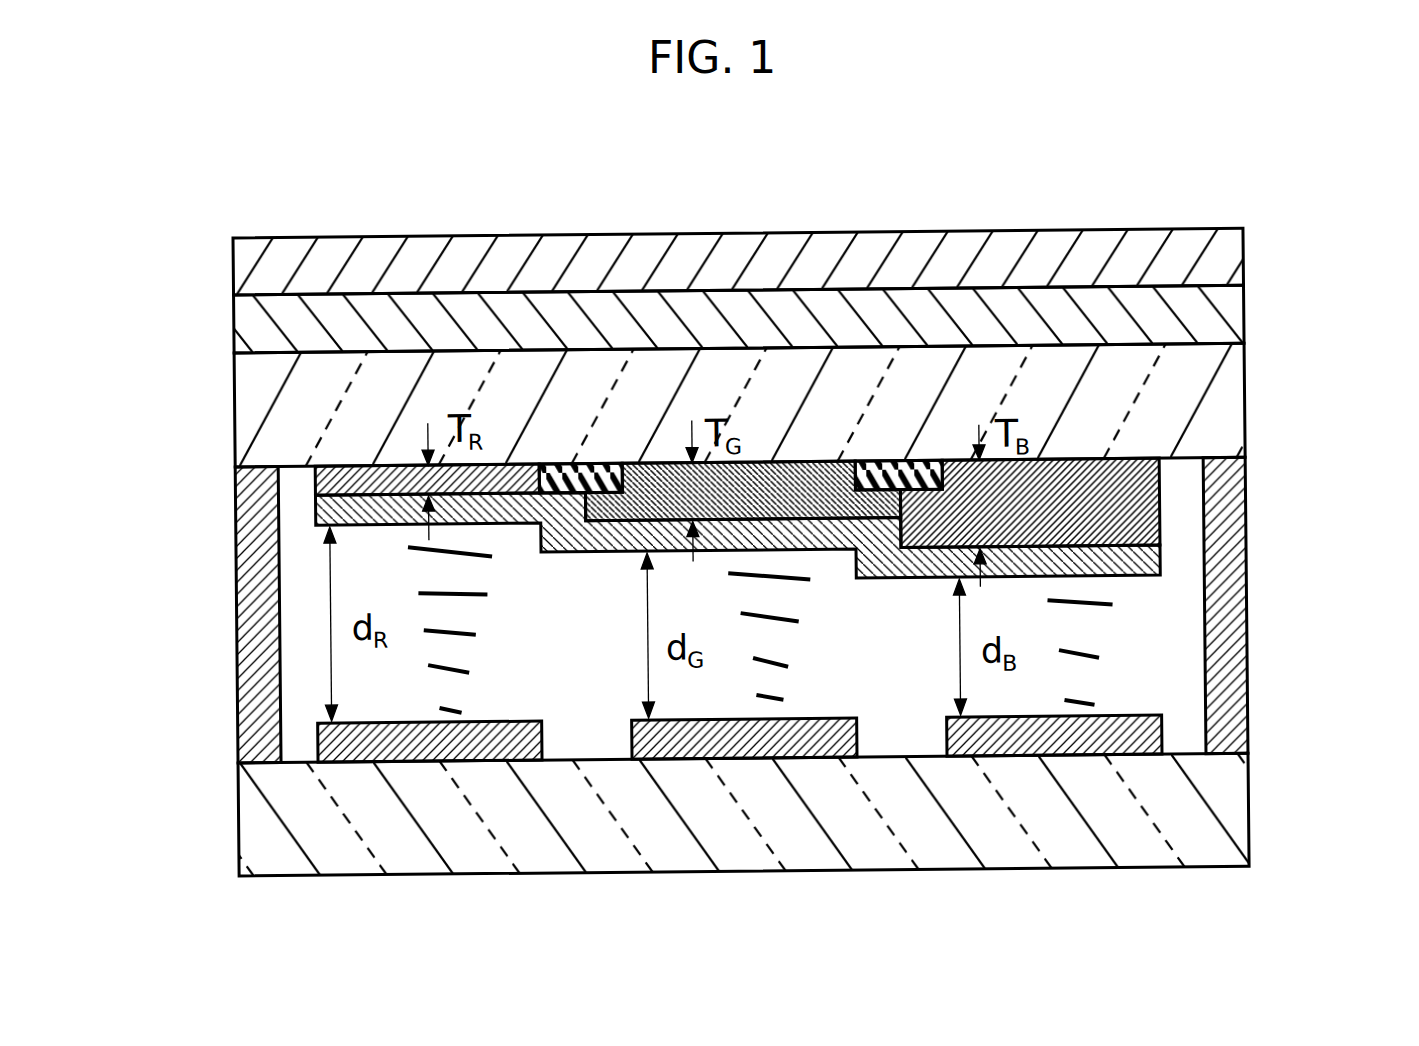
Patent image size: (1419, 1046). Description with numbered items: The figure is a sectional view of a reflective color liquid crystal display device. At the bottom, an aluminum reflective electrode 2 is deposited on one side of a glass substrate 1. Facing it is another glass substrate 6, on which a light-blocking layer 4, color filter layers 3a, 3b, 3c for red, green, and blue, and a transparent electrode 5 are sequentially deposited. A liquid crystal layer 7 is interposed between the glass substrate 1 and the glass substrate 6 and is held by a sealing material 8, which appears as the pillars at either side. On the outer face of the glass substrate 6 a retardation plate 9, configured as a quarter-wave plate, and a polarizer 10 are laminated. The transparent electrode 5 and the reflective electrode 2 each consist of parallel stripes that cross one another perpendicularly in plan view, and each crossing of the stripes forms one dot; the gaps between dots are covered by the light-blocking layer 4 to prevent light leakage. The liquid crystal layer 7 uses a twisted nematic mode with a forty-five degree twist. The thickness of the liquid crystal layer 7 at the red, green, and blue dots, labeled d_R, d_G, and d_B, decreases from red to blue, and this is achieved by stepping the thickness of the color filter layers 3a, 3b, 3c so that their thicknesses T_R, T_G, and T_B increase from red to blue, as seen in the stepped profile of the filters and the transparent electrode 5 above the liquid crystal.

The glass substrate 1 is at (1205, 820).
The reflective electrode 2 is at (1117, 737).
The color filter layer for red 3a is at (388, 474).
The color filter layer for green 3b is at (792, 476).
The color filter layer for blue 3c is at (1080, 500).
The light-blocking layer 4 is at (577, 478).
The transparent electrode 5 is at (1160, 555).
The glass substrate 6 is at (1230, 393).
The liquid crystal layer 7 is at (1138, 650).
The sealing material 8 is at (255, 655).
The retardation plate 9 is at (1225, 305).
The polarizer 10 is at (1217, 240).